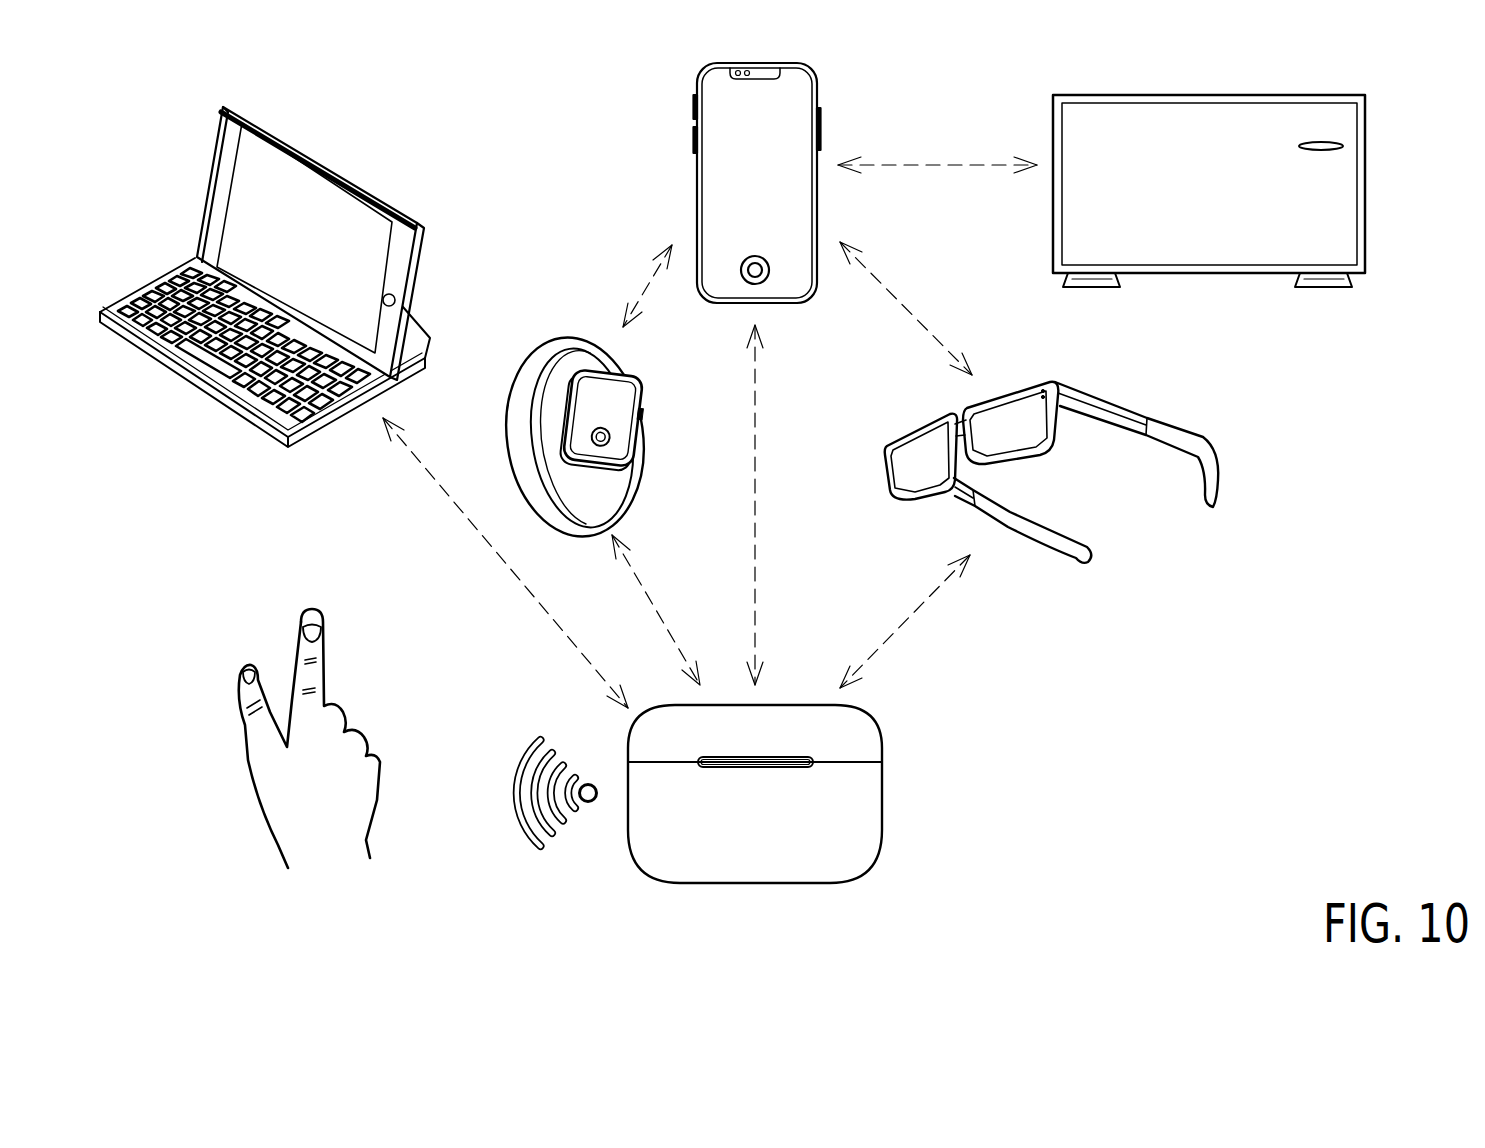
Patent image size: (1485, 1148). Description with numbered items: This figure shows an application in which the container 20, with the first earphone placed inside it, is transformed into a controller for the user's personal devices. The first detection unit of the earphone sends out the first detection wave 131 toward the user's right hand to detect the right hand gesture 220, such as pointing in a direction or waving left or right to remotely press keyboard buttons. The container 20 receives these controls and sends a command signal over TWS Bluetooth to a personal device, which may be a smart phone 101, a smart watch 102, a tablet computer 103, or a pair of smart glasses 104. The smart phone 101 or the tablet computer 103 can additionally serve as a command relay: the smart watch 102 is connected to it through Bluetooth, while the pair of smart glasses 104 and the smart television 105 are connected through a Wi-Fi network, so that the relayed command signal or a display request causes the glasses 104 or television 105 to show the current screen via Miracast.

The container 20 is at (840, 805).
The smart phone 101 is at (727, 178).
The smart watch 102 is at (535, 381).
The tablet computer 103 is at (208, 175).
The pair of smart glasses 104 is at (1106, 406).
The smart television 105 is at (1323, 207).
The first detection wave 131 is at (537, 742).
The right hand gesture 220 is at (344, 787).